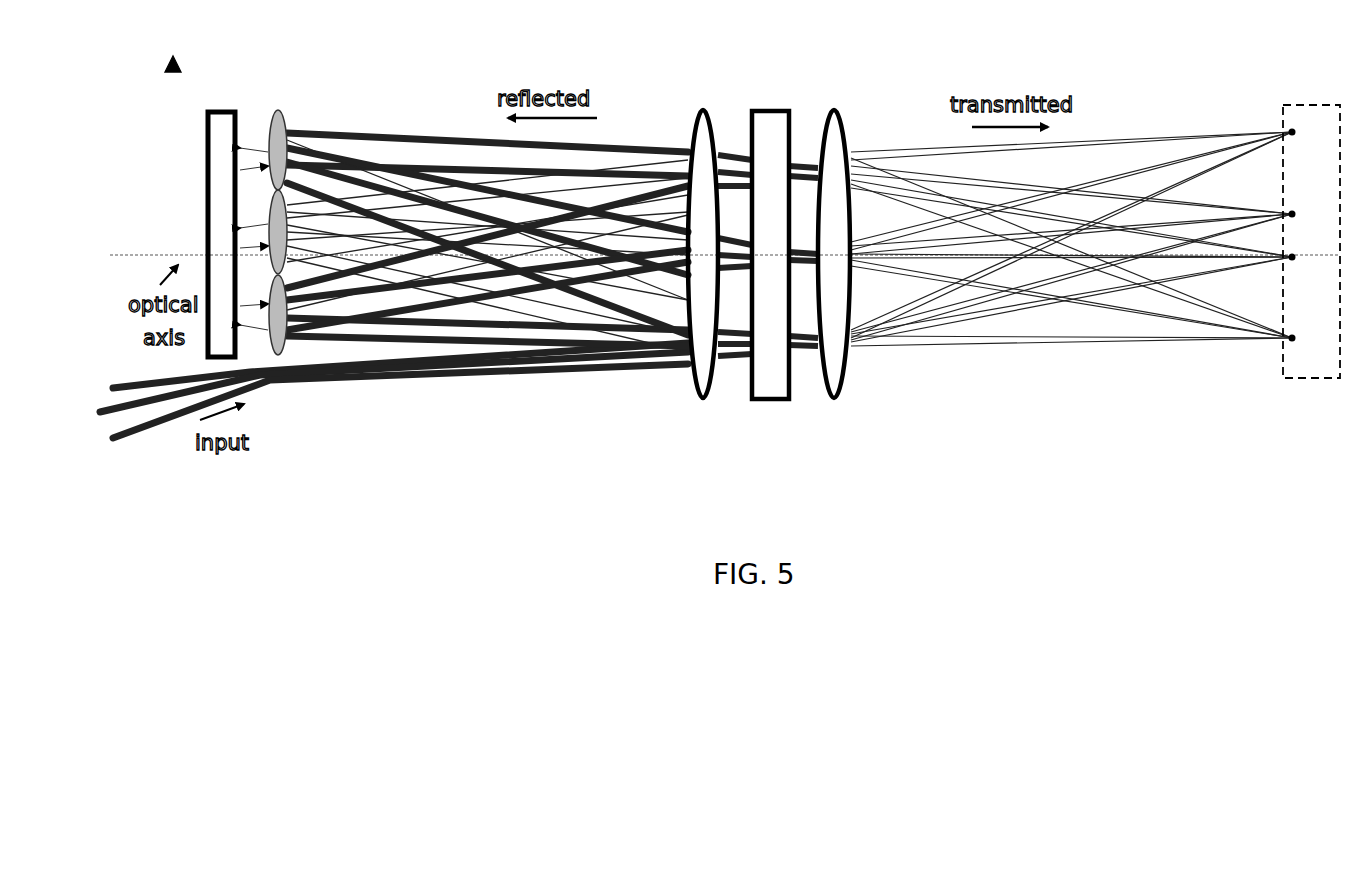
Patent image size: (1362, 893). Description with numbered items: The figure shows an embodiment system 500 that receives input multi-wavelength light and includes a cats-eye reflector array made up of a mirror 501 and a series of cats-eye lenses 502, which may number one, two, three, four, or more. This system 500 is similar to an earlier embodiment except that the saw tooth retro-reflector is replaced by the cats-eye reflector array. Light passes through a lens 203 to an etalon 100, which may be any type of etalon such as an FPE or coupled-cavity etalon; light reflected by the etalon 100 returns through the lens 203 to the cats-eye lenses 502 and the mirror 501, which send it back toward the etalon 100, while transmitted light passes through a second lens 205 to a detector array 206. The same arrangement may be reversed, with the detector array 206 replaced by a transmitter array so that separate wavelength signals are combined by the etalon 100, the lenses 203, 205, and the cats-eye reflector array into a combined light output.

The system 500 is at (173, 56).
The mirror 501 is at (200, 234).
The cats-eye lenses 502 is at (315, 204).
The lens 203 is at (664, 277).
The etalon 100 is at (746, 281).
The lens 205 is at (876, 263).
The detector array 206 is at (1270, 223).